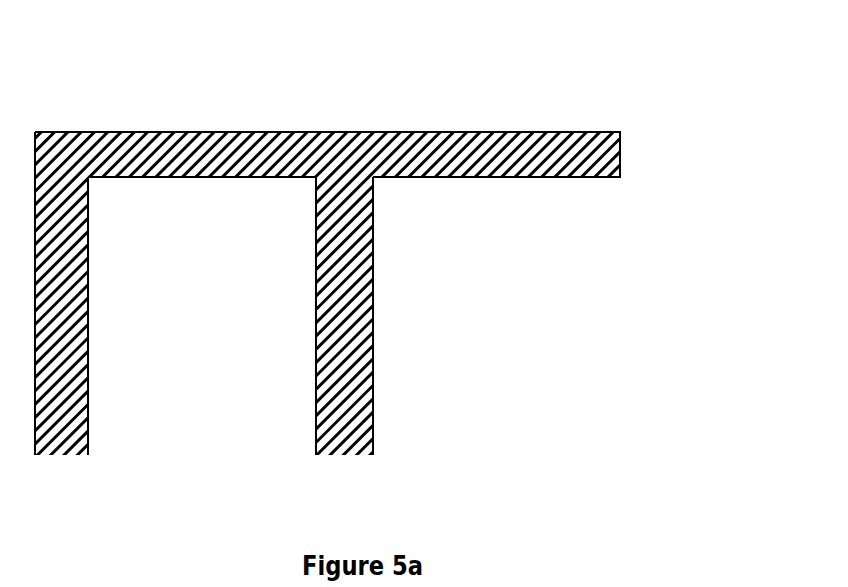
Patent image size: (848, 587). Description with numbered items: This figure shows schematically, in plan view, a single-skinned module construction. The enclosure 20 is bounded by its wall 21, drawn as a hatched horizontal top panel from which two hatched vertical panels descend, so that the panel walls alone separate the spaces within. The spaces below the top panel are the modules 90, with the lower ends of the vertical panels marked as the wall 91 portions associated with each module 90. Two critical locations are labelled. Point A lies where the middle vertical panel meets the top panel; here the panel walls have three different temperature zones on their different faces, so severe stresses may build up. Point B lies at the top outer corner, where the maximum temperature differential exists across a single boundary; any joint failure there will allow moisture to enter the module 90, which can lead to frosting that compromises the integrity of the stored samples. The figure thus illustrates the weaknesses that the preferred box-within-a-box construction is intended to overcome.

The enclosure 20 is at (560, 103).
The wall of the enclosure 21 is at (606, 126).
The module 90 is at (232, 289).
The high integrity wall 91 is at (88, 445).
The point A is at (378, 131).
The point B is at (152, 146).